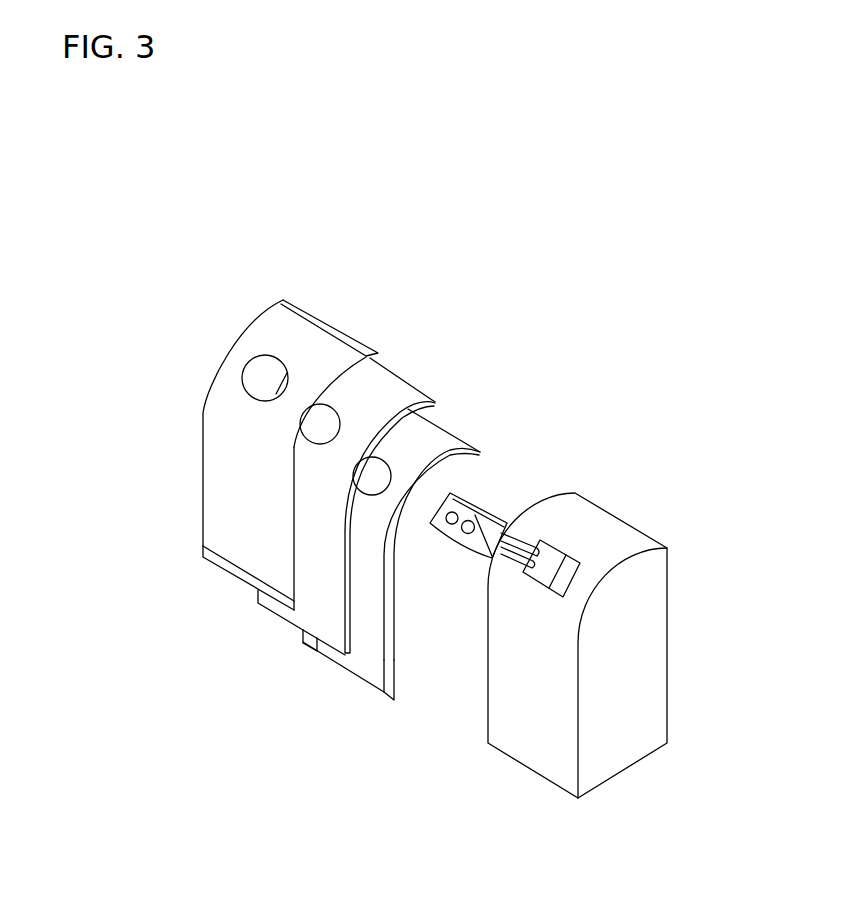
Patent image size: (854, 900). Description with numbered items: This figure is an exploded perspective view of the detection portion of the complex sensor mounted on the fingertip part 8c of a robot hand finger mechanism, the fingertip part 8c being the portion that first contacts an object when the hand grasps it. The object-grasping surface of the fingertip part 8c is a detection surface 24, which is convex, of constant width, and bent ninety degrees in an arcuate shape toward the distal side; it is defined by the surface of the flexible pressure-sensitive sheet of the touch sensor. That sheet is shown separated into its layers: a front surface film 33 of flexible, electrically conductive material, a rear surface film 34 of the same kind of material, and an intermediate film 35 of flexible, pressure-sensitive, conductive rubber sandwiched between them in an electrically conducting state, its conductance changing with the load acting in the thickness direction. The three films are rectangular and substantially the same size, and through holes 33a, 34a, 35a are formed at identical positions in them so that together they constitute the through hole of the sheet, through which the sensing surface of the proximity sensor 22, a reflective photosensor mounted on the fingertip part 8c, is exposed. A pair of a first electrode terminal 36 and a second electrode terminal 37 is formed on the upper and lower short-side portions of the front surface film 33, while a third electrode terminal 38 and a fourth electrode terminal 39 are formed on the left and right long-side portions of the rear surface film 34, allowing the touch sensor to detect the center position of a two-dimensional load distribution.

The fingertip part 8c is at (667, 453).
The proximity sensor 22 is at (483, 507).
The detection surface 24 is at (227, 435).
The front surface film 33 is at (203, 477).
The through hole 33a is at (268, 360).
The rear surface film 34 is at (367, 672).
The through hole 34a is at (380, 458).
The intermediate film 35 is at (307, 538).
The through hole 35a is at (320, 404).
The first electrode terminal 36 is at (334, 322).
The second electrode terminal 37 is at (218, 560).
The third electrode terminal 38 is at (303, 643).
The fourth electrode terminal 39 is at (390, 688).